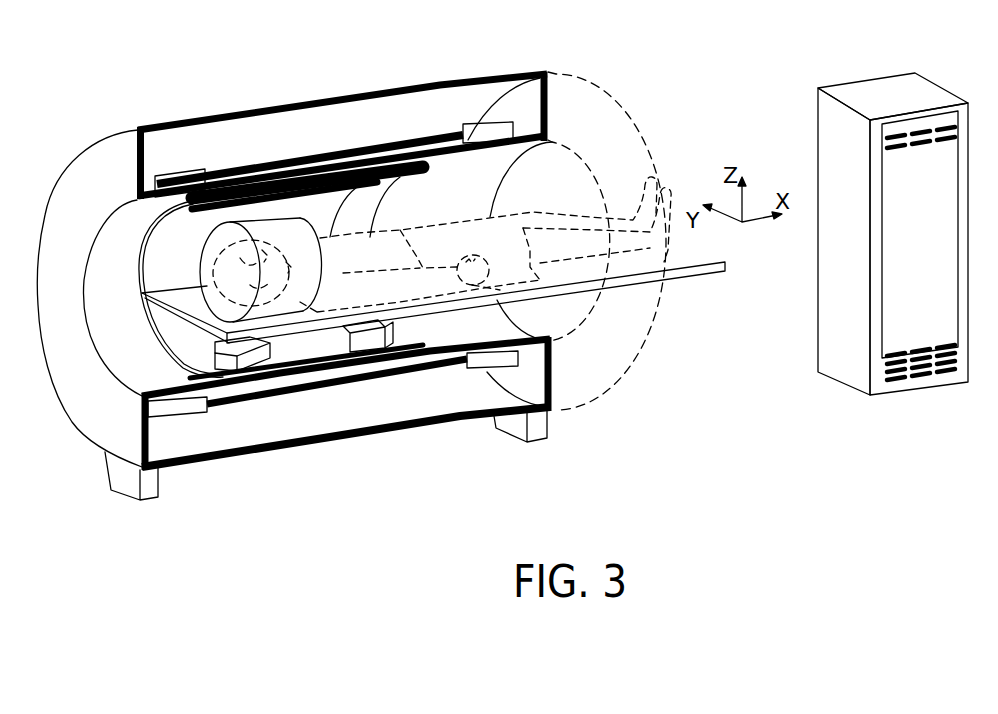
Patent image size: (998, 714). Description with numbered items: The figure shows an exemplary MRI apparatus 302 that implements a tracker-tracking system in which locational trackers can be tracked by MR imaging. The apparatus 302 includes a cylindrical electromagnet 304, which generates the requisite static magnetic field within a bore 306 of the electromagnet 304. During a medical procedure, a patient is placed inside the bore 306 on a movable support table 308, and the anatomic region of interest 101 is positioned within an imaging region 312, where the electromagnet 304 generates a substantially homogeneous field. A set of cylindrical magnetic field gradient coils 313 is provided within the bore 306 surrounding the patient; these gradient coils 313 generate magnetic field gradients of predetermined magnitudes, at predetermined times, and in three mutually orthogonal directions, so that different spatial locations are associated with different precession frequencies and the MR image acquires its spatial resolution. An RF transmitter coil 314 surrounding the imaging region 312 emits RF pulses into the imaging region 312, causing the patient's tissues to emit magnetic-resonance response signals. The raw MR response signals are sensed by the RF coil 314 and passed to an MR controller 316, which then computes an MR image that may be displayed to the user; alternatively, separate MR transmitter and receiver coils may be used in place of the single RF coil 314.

The anatomic region of interest 101 is at (208, 268).
The MRI apparatus 302 is at (520, 493).
The cylindrical electromagnet 304 is at (343, 150).
The bore 306 is at (577, 313).
The movable support table 308 is at (693, 273).
The imaging region 312 is at (255, 221).
The cylindrical magnetic field gradient coils 313 is at (440, 135).
The RF transmitter coil 314 is at (193, 357).
The MR controller 316 is at (830, 371).